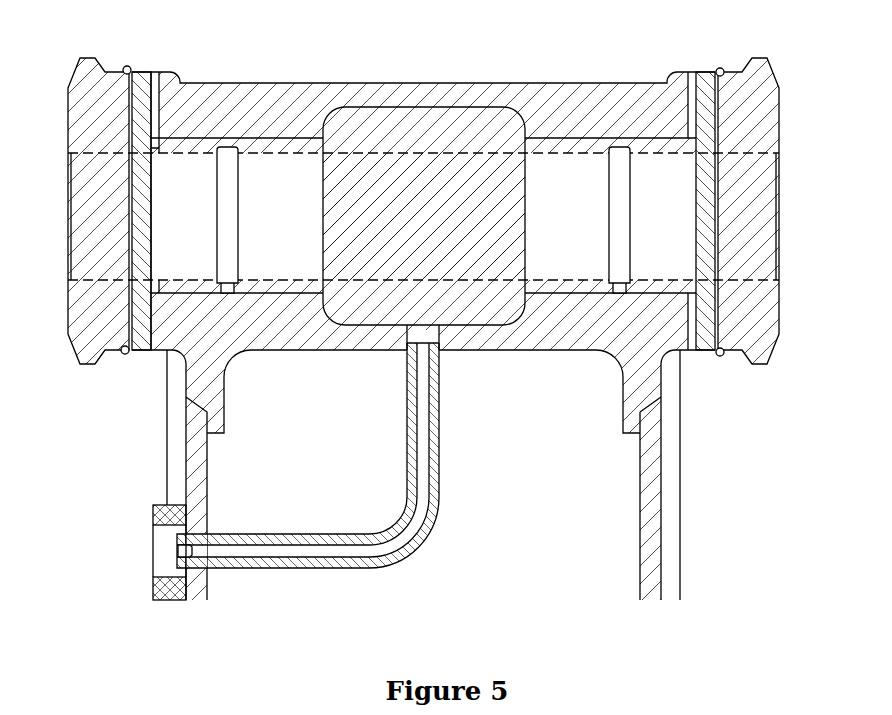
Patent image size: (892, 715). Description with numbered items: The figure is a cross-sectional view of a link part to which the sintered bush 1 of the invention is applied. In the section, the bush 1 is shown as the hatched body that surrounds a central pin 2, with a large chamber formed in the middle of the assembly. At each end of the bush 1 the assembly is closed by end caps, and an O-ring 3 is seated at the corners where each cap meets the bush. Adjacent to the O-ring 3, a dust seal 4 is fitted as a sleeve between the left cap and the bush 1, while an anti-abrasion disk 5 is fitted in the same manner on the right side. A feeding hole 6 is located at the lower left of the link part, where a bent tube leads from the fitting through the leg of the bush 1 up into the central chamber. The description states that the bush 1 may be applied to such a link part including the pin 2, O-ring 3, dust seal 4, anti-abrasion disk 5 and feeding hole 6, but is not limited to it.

The bush 1 is at (245, 140).
The pin 2 is at (386, 153).
The O-ring 3 is at (127, 65).
The dust seal 4 is at (153, 143).
The anti-abrasion disk 5 is at (706, 80).
The feeding hole 6 is at (180, 550).